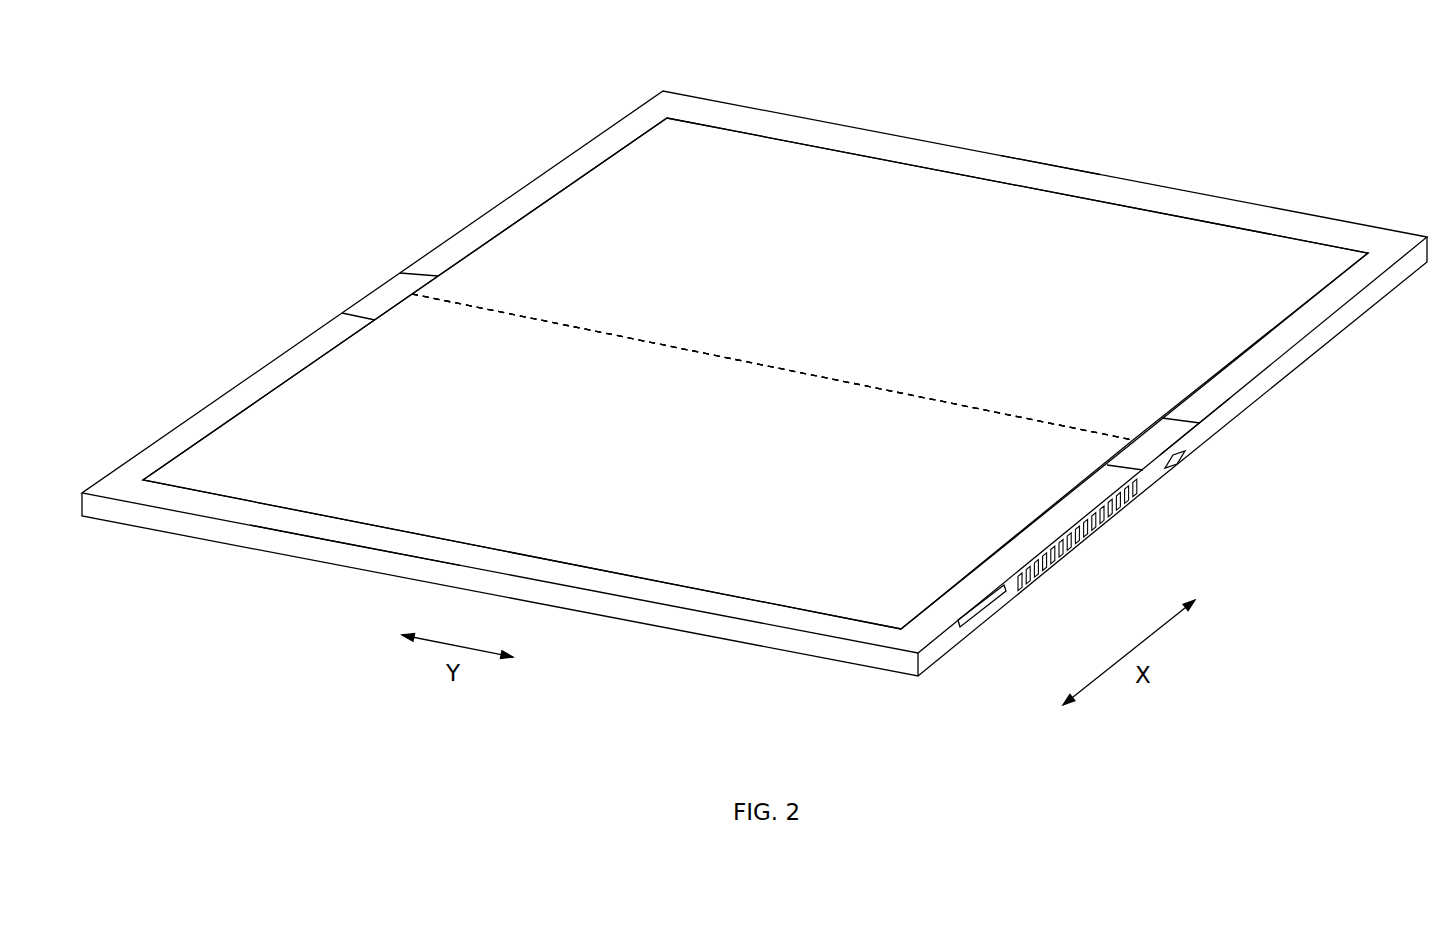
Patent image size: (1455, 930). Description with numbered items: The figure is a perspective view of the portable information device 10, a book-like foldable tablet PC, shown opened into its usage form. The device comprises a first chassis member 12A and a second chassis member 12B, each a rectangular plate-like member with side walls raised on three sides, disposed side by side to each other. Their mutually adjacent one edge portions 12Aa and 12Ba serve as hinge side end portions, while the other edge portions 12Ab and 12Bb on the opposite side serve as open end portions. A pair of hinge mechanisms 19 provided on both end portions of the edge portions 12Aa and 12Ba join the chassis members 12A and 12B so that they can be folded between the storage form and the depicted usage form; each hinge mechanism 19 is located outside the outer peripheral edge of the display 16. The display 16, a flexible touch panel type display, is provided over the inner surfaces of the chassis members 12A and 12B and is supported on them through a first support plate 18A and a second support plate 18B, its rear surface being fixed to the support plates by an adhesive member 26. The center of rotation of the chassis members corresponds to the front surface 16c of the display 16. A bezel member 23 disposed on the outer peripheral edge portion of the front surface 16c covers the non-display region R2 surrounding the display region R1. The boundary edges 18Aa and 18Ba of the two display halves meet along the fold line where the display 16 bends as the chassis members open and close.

The portable information device 10 is at (223, 107).
The first chassis member 12A is at (612, 499).
The second chassis member 12B is at (898, 287).
The one edge portion 12Aa is at (1190, 447).
The other edge portion 12Ab is at (632, 610).
The one edge portion 12Ba is at (1172, 458).
The other edge portion 12Bb is at (1432, 240).
The display 16 is at (755, 376).
The front surface 16c is at (718, 157).
The first support plate 18A is at (790, 570).
The second support plate 18B is at (930, 205).
The edge of first display region 18Aa is at (790, 330).
The edge of second display region 18Ba is at (720, 365).
The hinge mechanism 19 is at (385, 293).
The bezel member 23 is at (985, 588).
The adhesive member 26 is at (1085, 270).
The display region R1 is at (393, 515).
The non-display region R2 is at (288, 522).